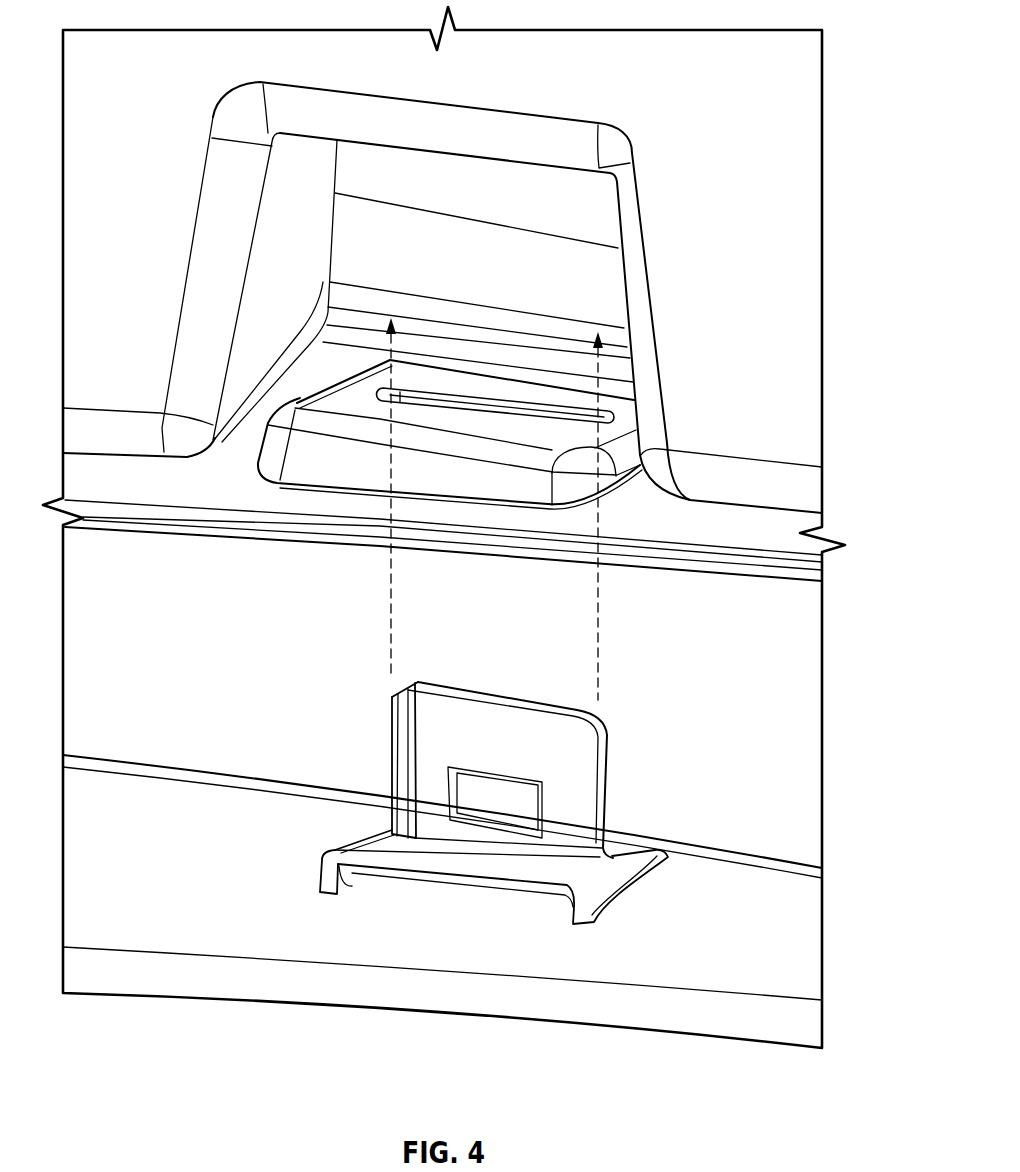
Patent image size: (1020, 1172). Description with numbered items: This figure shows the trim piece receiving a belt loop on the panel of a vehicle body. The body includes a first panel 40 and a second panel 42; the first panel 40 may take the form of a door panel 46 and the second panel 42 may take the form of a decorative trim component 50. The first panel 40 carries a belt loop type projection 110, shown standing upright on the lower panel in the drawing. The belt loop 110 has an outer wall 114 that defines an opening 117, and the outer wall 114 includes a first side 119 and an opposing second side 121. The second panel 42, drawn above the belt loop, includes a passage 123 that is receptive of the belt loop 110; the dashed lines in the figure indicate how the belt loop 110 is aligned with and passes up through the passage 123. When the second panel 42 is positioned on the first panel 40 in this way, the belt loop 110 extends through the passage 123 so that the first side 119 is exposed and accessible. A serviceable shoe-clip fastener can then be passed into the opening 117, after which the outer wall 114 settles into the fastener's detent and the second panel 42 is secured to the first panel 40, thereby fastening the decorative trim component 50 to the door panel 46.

The first panel 40 is at (695, 1064).
The second panel 42 is at (805, 425).
The door panel 46 is at (808, 912).
The decorative trim component 50 is at (767, 497).
The belt loop type projection 110 is at (480, 771).
The outer wall 114 is at (550, 755).
The opening 117 is at (481, 768).
The first side 119 is at (583, 790).
The second side 121 is at (428, 683).
The passage 123 is at (461, 402).